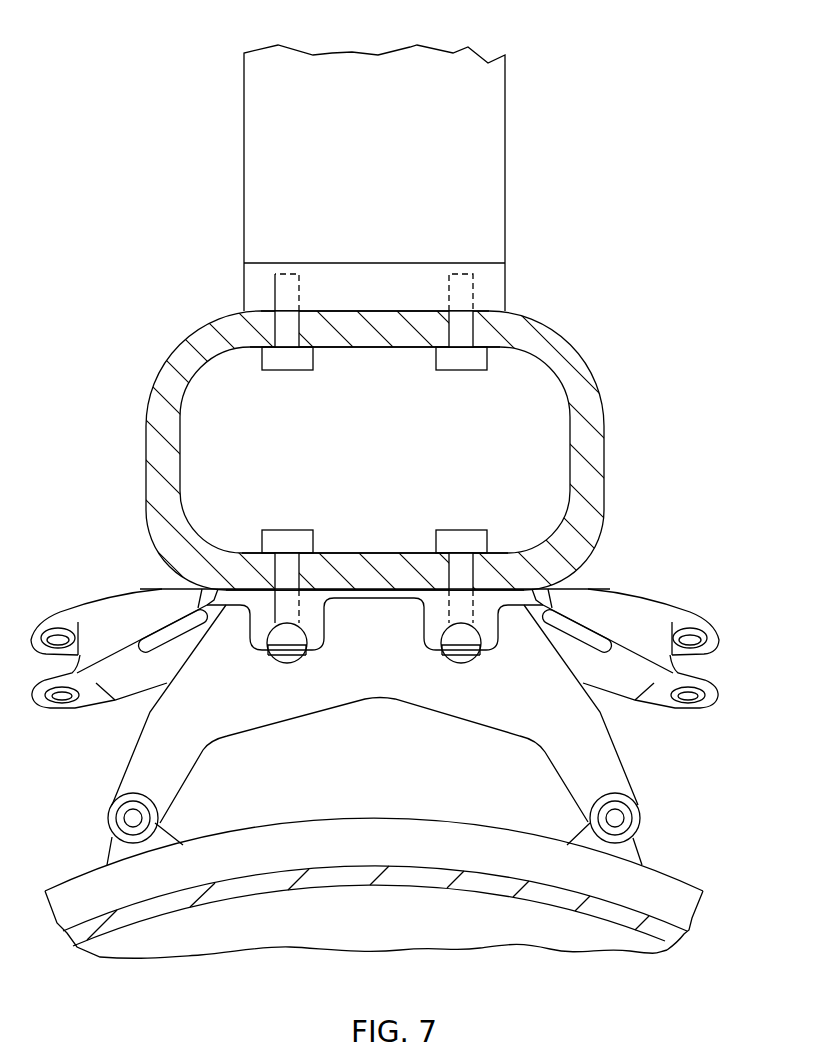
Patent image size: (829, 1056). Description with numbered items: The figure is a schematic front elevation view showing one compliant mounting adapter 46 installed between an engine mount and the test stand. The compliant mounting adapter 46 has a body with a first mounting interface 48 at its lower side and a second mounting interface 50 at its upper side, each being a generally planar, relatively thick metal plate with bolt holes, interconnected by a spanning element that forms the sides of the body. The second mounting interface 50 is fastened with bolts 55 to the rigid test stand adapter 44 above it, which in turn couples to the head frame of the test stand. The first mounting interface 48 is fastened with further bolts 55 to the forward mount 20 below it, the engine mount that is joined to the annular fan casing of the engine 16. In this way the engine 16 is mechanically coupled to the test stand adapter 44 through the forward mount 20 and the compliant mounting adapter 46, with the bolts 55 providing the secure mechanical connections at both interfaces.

The engine 16 is at (677, 893).
The forward mount 20 is at (602, 765).
The test stand adapter 44 is at (380, 224).
The compliant mounting adapter 46 is at (598, 322).
The first mounting interface 48 is at (370, 565).
The second mounting interface 50 is at (387, 337).
The bolts 55 is at (297, 362).